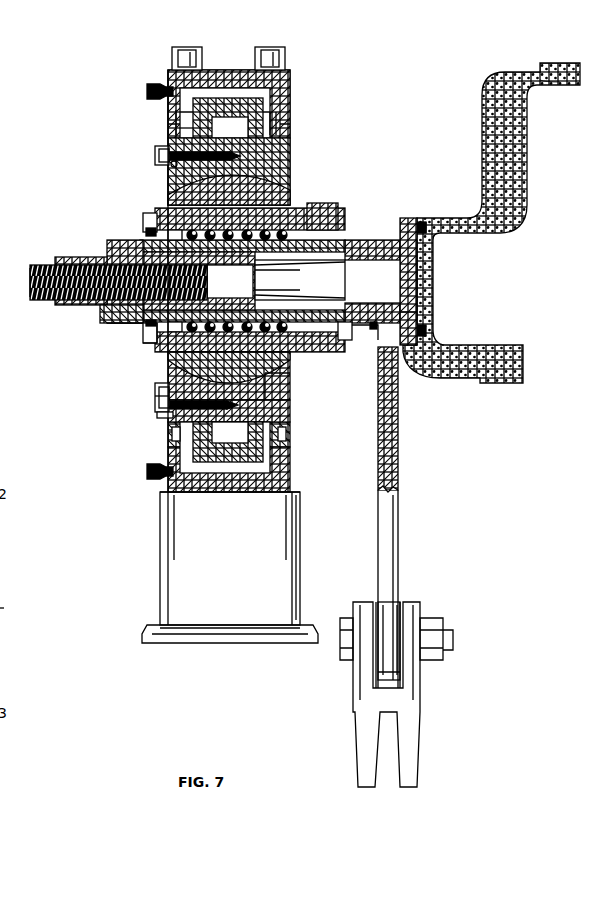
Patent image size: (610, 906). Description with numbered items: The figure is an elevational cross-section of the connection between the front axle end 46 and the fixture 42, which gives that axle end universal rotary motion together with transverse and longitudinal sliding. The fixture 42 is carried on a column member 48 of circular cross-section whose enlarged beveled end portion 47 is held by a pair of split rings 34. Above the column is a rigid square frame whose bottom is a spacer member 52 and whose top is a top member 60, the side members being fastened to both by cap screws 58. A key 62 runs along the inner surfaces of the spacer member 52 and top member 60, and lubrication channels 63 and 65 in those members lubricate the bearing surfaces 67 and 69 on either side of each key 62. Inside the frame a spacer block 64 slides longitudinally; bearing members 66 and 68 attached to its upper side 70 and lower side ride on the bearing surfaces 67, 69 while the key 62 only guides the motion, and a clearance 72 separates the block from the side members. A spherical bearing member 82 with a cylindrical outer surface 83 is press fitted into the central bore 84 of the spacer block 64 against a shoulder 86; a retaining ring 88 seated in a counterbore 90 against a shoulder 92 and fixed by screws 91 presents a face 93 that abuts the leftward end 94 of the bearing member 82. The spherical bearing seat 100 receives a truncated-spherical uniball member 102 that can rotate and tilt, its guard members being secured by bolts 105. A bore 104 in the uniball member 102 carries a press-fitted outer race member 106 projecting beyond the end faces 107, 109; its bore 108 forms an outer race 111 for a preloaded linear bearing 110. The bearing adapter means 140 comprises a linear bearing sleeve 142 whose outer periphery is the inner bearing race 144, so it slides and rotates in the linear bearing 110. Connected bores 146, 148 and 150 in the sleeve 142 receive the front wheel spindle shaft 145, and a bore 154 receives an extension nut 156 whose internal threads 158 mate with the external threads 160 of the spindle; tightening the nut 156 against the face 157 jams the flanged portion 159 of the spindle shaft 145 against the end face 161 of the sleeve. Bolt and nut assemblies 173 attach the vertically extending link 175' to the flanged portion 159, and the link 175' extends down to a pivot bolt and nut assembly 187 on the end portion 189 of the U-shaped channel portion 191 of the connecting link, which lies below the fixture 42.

The split rings 34 is at (5, 608).
The fixture 42 is at (132, 472).
The front axle end 46 is at (446, 216).
The enlarged beveled end portion 47 is at (158, 630).
The column member 48 is at (172, 540).
The spacer member 52 is at (282, 482).
The cap screws 58 is at (187, 47).
The top member 60 is at (290, 81).
The key 62 is at (290, 143).
The lubrication channel 63 is at (172, 490).
The spacer block 64 is at (290, 406).
The lubrication channel 65 is at (214, 92).
The bearing members 66 is at (170, 125).
The bearing surface 67 is at (170, 450).
The bearing members 68 is at (172, 439).
The bearing surface 69 is at (175, 118).
The upper side 70 is at (172, 131).
The clearance 72 is at (168, 432).
The spherical bearing member 82 is at (302, 192).
The cylindrical outer surface 83 is at (156, 158).
The central circular bore 84 is at (287, 168).
The shoulder 86 is at (290, 384).
The retaining ring 88 is at (156, 393).
The counterbore 90 is at (172, 419).
The screws 91 is at (155, 414).
The shoulder 92 is at (168, 405).
The face 93 is at (172, 166).
The leftward end 94 is at (156, 165).
The spherical bearing seat 100 is at (170, 368).
The uniball member 102 is at (229, 367).
The longitudinally extending bore 104 is at (156, 213).
The bolts 105 is at (147, 330).
The outer race member 106 is at (347, 240).
The end face 107 is at (168, 342).
The longitudinally extending bore 108 is at (160, 326).
The end face 109 is at (292, 352).
The linear bearing 110 is at (306, 212).
The outer race 111 is at (333, 322).
The bearing adapter means 140 is at (84, 237).
The linear bearing sleeve 142 is at (100, 318).
The inner bearing race 144 is at (122, 326).
The front wheel spindle shaft 145 is at (300, 280).
The bore 146 is at (425, 248).
The bore 148 is at (348, 240).
The bore 150 is at (268, 268).
The bore 154 is at (95, 258).
The extension nut 156 is at (68, 262).
The face 157 is at (288, 292).
The internal threads 158 is at (30, 290).
The flanged portion 159 is at (406, 272).
The external threads 160 is at (163, 253).
The end face 161 is at (404, 313).
The bolt and nut assemblies 173 is at (374, 343).
The vertically extending link 175' is at (414, 518).
The pivot bolt and nut assembly 187 is at (346, 643).
The end portion 189 is at (362, 683).
The U-shaped channel portion 191 is at (438, 688).